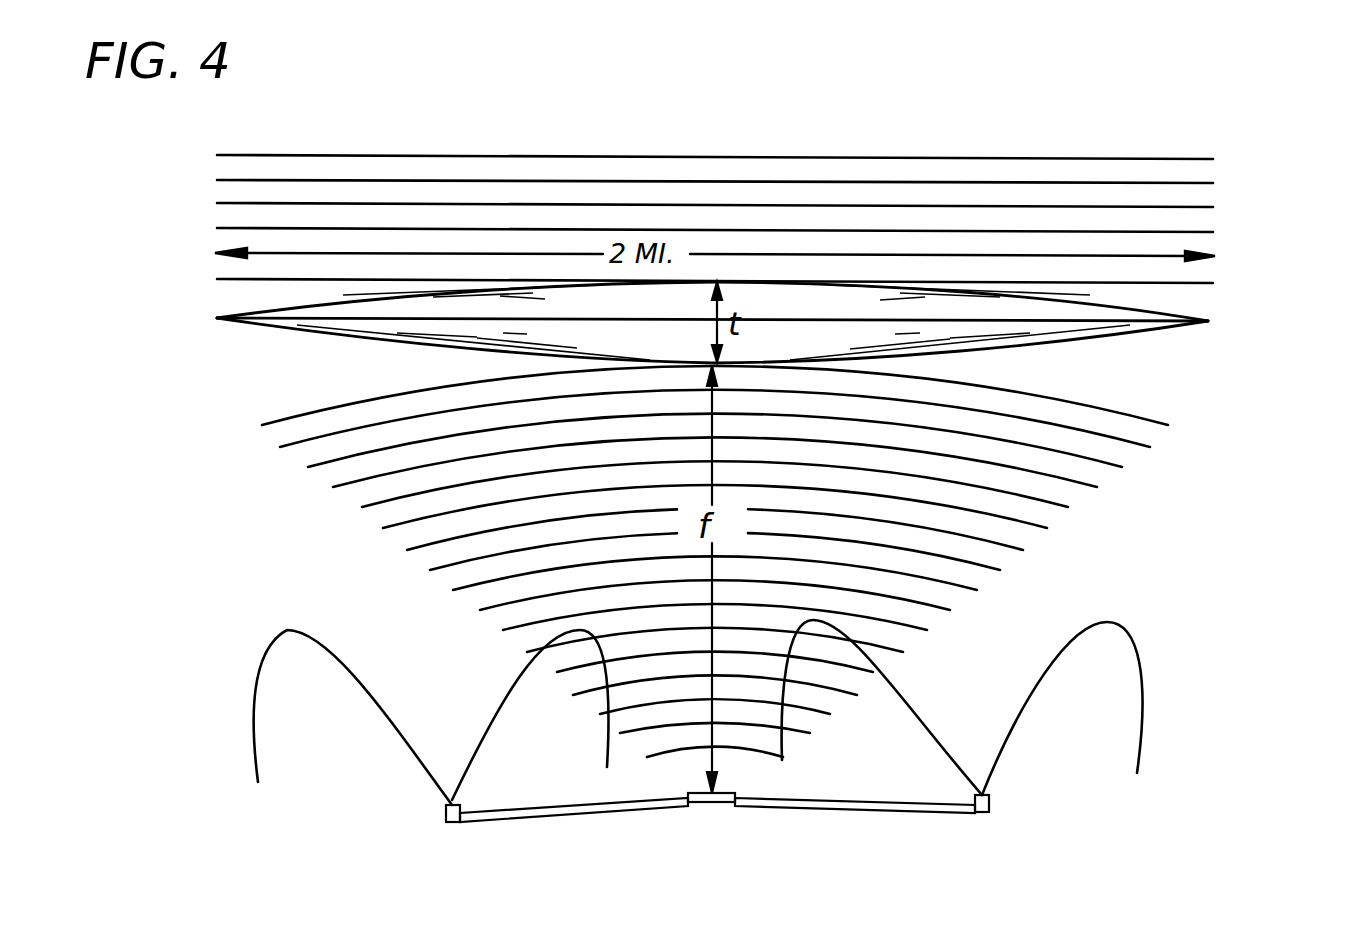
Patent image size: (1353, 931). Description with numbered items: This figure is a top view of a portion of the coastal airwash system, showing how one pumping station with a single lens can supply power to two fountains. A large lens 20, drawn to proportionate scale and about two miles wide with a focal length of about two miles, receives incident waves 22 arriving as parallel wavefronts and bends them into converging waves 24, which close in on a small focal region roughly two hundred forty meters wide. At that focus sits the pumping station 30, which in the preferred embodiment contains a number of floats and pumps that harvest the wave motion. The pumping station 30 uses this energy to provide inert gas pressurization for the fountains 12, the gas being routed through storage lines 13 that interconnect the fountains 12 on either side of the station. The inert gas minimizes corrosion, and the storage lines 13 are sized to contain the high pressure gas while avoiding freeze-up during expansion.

The fountain 12 is at (445, 810).
The storage line 13 is at (562, 812).
The lens 20 is at (1112, 335).
The incident waves 22 is at (1173, 207).
The converging waves 24 is at (1047, 528).
The pumping station 30 is at (737, 791).